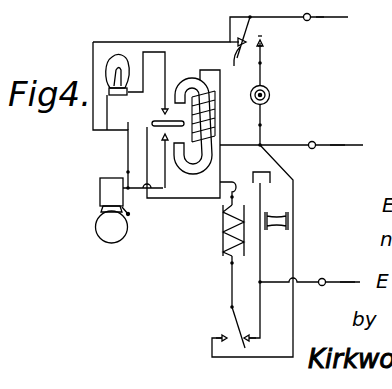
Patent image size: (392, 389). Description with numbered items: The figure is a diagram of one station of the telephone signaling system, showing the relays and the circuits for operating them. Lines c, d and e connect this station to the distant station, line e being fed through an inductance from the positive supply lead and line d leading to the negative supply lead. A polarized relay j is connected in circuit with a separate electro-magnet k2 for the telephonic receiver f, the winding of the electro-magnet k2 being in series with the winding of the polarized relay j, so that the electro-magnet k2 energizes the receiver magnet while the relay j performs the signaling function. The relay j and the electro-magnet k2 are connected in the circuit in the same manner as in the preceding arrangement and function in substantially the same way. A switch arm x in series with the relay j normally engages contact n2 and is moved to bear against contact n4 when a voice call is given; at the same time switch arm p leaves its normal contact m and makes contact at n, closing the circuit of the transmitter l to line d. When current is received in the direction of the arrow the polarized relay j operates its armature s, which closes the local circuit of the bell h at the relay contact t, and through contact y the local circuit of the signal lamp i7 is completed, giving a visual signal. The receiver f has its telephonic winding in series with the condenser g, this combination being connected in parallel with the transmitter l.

The lamp i7 is at (115, 56).
The contact y is at (156, 121).
The relay armature s is at (152, 124).
The bell h is at (112, 180).
The relay contact t is at (166, 141).
The polarized relay j is at (213, 100).
The separate electro-magnet k2 is at (222, 233).
The normal contact m is at (240, 52).
The switch arm p is at (263, 29).
The alternative contact n is at (263, 44).
The line e is at (321, 18).
The transmitter l is at (270, 95).
The line d is at (342, 147).
The line c is at (348, 280).
The condenser g is at (271, 181).
The receiver f is at (290, 222).
The switch arm x is at (238, 321).
The contact n4 is at (222, 338).
The contact n2 is at (249, 338).